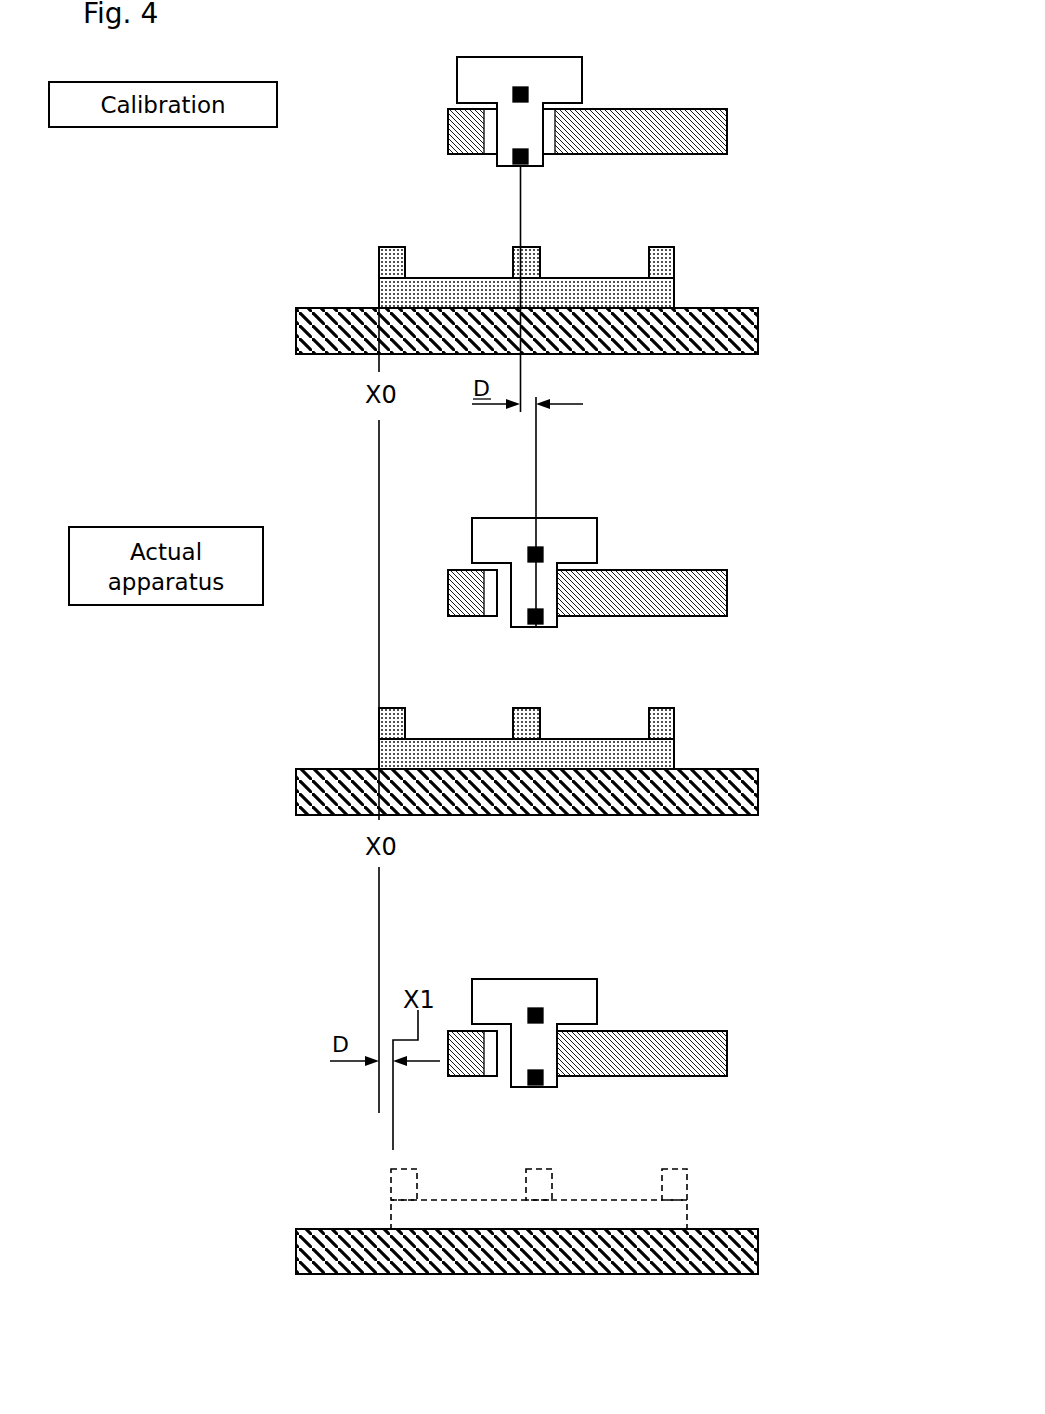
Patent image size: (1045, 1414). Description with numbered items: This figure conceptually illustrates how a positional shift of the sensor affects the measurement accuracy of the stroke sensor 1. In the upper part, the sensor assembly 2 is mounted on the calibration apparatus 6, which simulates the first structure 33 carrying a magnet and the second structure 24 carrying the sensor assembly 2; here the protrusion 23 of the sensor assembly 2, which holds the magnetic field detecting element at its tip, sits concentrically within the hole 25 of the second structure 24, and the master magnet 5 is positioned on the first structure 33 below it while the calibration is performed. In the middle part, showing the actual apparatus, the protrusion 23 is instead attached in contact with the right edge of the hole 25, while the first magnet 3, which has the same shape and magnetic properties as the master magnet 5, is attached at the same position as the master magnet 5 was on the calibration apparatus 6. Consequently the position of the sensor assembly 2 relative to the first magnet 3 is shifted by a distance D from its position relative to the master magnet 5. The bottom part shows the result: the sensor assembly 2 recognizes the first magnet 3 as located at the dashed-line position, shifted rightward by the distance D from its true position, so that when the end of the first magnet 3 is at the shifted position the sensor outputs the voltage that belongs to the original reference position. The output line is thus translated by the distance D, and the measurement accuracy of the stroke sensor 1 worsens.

The stroke sensor 1 is at (362, 172).
The sensor assembly 2 is at (432, 72).
The first magnet 3 is at (350, 712).
The master magnet 5 is at (350, 274).
The calibration apparatus 6 is at (750, 228).
The protrusion 23 is at (503, 130).
The second structure 24 is at (683, 107).
The hole 25 is at (555, 135).
The first structure 33 is at (723, 307).